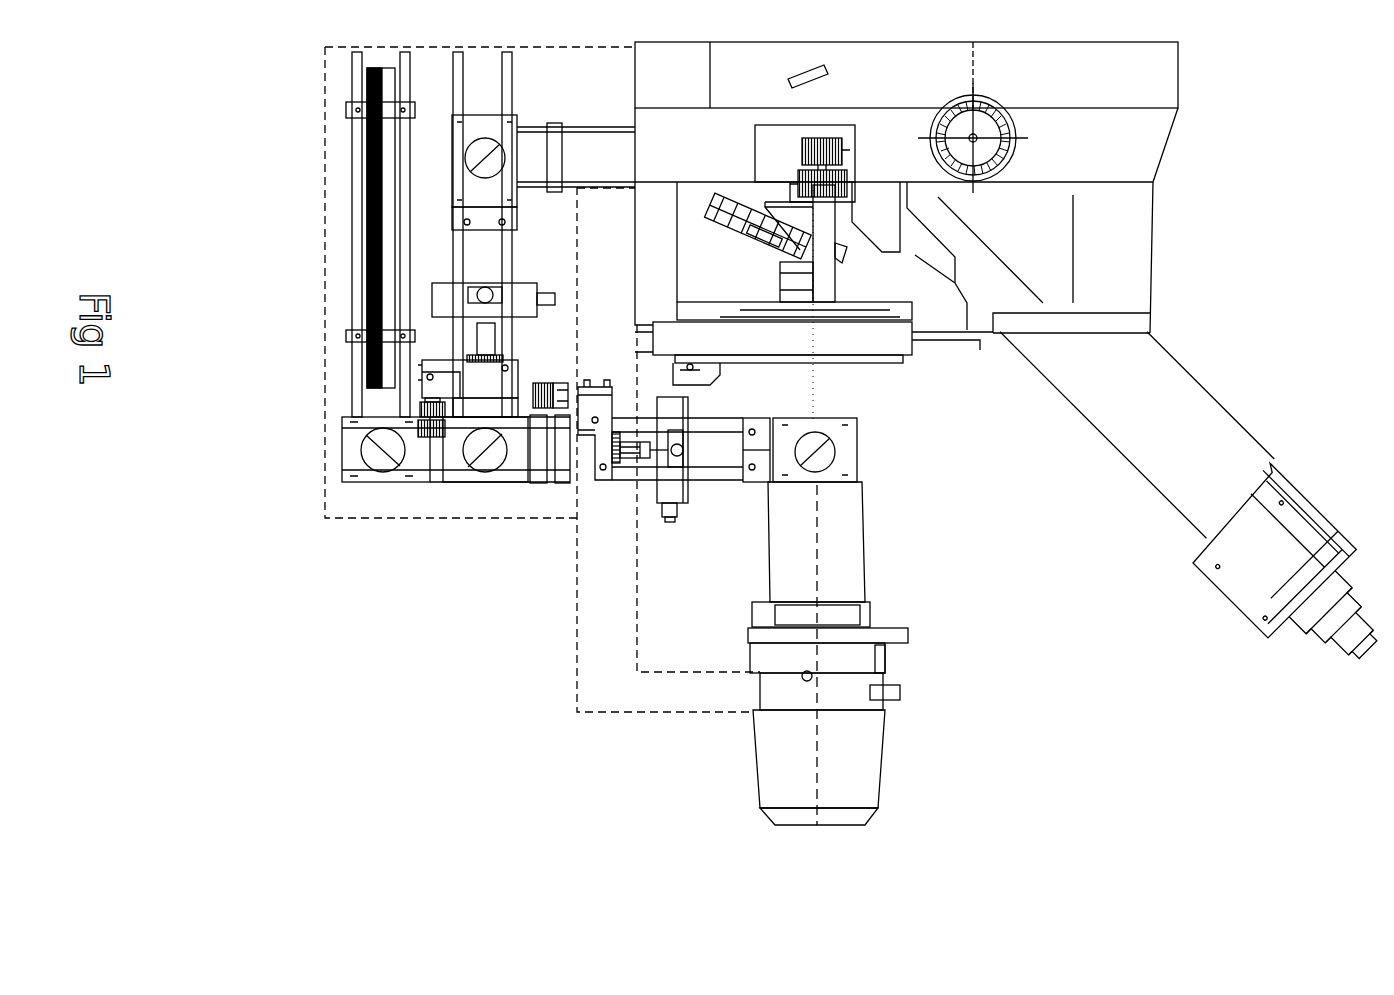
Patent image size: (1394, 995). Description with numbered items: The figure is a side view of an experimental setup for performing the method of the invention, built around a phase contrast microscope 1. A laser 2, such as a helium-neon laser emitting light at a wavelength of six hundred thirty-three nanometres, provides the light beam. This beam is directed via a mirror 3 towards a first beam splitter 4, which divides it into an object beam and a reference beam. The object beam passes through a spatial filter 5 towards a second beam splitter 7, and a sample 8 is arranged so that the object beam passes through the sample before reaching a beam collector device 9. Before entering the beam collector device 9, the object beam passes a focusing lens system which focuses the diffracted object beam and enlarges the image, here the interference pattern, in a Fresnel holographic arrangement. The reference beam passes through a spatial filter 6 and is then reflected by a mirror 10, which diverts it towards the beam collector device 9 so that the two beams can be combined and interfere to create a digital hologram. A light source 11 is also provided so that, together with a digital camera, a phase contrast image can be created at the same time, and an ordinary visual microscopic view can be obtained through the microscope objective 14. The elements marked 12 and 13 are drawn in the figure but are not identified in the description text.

The phase contrast microscope 1 is at (1255, 685).
The laser 2 is at (542, 379).
The mirror 3 is at (386, 464).
The first beam splitter 4 is at (494, 463).
The spatial filter 5 is at (614, 445).
The spatial filter 6 is at (493, 350).
The second beam splitter 7 is at (815, 450).
The sample 8 is at (773, 347).
The beam collector device 9 is at (805, 163).
The mirror 10 is at (526, 234).
The light source 11 is at (804, 653).
The slot 12 is at (799, 69).
The tube 13 is at (1140, 398).
The microscope objective 14 is at (1288, 588).